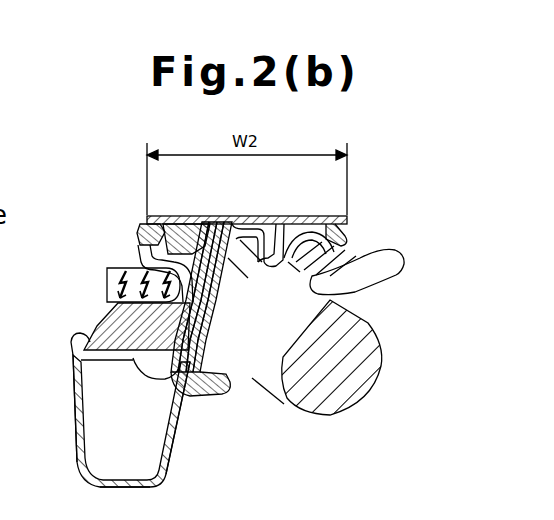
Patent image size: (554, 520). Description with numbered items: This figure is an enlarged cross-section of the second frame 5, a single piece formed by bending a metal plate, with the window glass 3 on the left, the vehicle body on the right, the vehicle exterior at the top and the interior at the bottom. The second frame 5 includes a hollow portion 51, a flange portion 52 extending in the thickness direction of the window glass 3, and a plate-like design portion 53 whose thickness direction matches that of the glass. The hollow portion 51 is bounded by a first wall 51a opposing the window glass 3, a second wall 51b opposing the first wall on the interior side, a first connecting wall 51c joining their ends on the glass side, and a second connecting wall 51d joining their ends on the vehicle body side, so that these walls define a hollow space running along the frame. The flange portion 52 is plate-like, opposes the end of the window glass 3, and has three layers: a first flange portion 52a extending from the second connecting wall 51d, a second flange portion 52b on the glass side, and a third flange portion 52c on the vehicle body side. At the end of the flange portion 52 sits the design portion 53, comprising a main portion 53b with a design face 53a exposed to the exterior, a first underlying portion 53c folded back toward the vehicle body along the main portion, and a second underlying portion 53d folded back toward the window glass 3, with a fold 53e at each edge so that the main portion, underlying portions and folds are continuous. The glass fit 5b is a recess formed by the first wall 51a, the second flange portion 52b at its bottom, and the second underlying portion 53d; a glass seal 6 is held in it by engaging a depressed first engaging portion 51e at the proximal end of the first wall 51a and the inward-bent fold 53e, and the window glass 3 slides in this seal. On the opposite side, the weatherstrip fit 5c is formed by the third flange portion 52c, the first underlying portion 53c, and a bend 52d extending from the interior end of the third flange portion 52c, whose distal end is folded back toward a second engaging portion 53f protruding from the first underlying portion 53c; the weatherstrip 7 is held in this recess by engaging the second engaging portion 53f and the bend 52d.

The window glass 3 is at (107, 285).
The second frame 5 is at (305, 445).
The glass fit 5b is at (92, 320).
The weatherstrip fit 5c is at (350, 268).
The glass seal 6 is at (138, 246).
The weatherstrip 7 is at (372, 324).
The hollow portion 51 is at (165, 482).
The first wall 51a is at (112, 360).
The second wall 51b is at (127, 484).
The first connecting wall 51c is at (76, 430).
The second connecting wall 51d is at (174, 442).
The first engaging portion 51e is at (160, 380).
The flange portion 52 is at (226, 288).
The first flange portion 52a is at (205, 330).
The second flange portion 52b is at (202, 352).
The third flange portion 52c is at (208, 370).
The bend 52d is at (210, 404).
The design portion 53 is at (318, 220).
The design face 53a is at (228, 220).
The main portion 53b is at (280, 221).
The first underlying portion 53c is at (342, 238).
The second underlying portion 53d is at (178, 220).
The fold 53e is at (148, 220).
The second engaging portion 53f is at (320, 274).